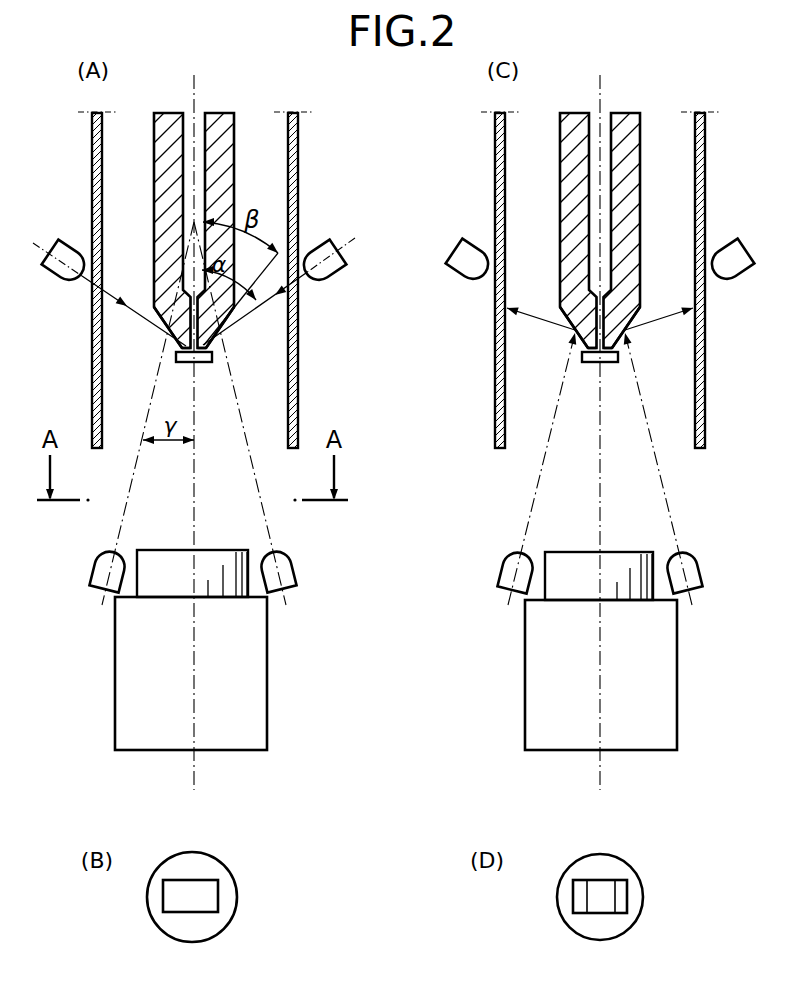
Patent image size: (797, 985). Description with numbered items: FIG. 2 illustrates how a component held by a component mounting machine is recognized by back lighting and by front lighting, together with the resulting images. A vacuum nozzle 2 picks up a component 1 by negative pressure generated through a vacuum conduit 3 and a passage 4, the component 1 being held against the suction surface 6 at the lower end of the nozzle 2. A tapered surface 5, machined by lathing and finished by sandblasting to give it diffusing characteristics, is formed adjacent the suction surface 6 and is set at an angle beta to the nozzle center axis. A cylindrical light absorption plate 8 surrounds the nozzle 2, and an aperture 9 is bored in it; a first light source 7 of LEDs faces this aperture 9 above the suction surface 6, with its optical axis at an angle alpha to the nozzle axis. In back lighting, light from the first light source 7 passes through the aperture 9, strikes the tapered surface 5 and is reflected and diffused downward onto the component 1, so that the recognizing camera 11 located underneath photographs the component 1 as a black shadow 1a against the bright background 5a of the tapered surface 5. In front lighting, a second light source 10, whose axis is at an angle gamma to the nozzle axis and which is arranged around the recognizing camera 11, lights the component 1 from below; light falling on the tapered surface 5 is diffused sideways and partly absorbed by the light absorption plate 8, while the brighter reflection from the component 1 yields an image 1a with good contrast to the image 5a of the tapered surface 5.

The component 1 is at (183, 363).
The image of component 1a is at (218, 885).
The vacuum nozzle 2 is at (220, 127).
The vacuum conduit 3 is at (184, 212).
The passage 4 is at (185, 313).
The tapered surface 5 is at (228, 314).
The image of tapered surface 5a is at (177, 868).
The suction surface 6 is at (199, 362).
The first light source 7 is at (63, 243).
The light absorption plate 8 is at (92, 168).
The aperture 9 is at (101, 289).
The second light source 10 is at (94, 562).
The recognizing camera 11 is at (250, 677).